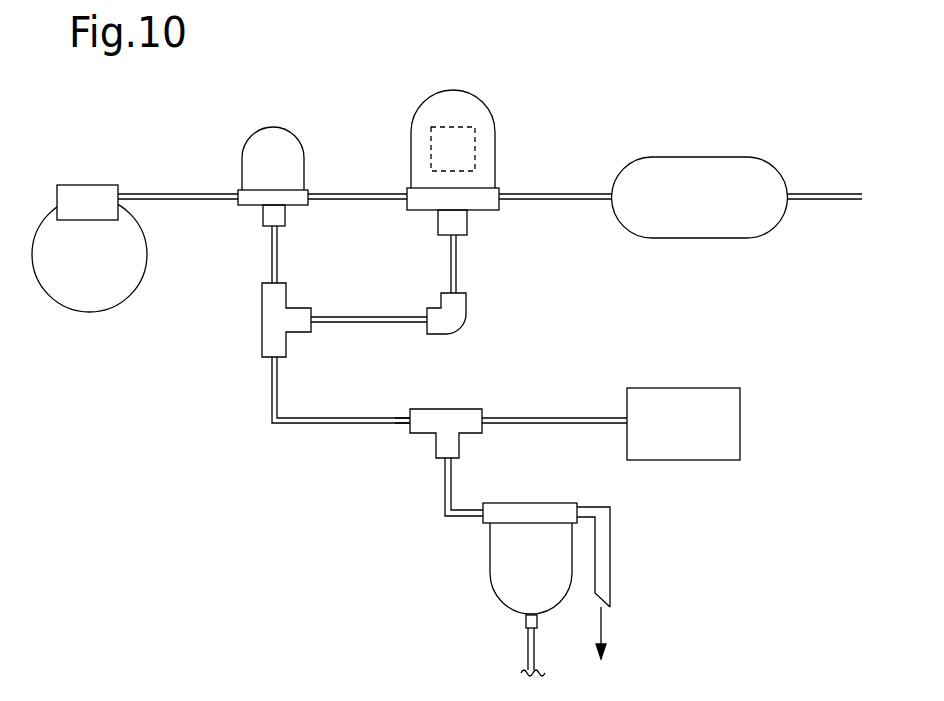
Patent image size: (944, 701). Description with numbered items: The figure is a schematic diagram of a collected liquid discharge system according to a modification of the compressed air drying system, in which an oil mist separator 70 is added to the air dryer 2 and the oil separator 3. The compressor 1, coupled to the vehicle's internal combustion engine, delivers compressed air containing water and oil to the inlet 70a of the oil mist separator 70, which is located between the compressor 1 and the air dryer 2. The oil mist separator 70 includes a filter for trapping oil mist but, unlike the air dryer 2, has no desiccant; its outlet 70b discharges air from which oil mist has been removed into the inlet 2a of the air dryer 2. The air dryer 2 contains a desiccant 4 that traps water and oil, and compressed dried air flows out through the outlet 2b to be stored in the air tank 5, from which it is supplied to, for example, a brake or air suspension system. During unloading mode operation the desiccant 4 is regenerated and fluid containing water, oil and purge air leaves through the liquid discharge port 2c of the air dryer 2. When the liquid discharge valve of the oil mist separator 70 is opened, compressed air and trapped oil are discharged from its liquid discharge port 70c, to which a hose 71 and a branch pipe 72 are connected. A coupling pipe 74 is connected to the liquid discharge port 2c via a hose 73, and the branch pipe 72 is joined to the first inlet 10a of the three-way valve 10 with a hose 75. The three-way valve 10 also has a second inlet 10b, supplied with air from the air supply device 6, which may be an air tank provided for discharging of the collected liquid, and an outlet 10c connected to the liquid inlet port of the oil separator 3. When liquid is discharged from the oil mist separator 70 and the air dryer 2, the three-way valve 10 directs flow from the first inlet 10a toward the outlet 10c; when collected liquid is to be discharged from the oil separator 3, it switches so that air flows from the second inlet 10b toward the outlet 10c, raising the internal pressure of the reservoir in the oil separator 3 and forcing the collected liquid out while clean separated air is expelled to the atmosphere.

The compressor 1 is at (90, 185).
The air dryer 2 is at (425, 97).
The inlet 2a is at (403, 193).
The outlet 2b is at (507, 190).
The liquid discharge port 2c is at (450, 243).
The oil separator 3 is at (537, 503).
The desiccant 4 is at (476, 136).
The air tank 5 is at (698, 157).
The air supply device 6 is at (698, 388).
The three-way valve 10 is at (443, 409).
The first inlet 10a is at (412, 409).
The second inlet 10b is at (494, 413).
The outlet 10c is at (443, 462).
The oil mist separator 70 is at (269, 127).
The inlet 70a is at (235, 190).
The outlet 70b is at (318, 190).
The liquid discharge port 70c is at (270, 230).
The hose 71 is at (271, 261).
The branch pipe 72 is at (300, 307).
The hose 73 is at (457, 263).
The coupling pipe 74 is at (467, 308).
The hose 75 is at (312, 427).